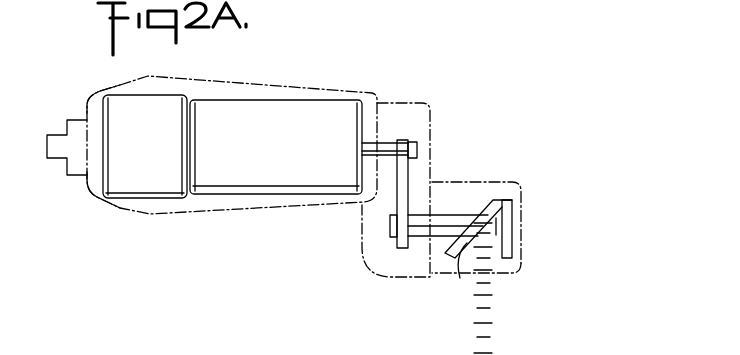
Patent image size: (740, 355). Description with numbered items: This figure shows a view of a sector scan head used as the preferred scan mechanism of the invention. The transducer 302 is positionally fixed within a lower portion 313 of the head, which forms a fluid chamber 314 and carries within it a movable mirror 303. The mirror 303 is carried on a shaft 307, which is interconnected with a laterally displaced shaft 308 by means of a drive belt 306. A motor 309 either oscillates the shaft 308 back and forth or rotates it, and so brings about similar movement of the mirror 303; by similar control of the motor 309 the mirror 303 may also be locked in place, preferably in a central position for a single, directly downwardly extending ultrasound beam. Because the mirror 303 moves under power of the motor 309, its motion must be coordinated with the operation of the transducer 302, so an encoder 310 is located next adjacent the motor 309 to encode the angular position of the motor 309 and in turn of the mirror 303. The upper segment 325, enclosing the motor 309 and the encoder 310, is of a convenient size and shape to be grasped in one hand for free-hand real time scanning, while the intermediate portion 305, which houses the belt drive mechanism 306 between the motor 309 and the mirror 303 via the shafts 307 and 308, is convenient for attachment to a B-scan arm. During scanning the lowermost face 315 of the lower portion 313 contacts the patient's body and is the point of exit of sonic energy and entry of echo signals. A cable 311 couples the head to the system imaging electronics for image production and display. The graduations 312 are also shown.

The transducer 302 is at (517, 240).
The mirror 303 is at (463, 263).
The intermediate portion 305 is at (360, 223).
The drive belt 306 is at (412, 171).
The shaft 307 is at (417, 237).
The shaft 308 is at (385, 146).
The motor 309 is at (258, 164).
The encoder 310 is at (140, 162).
The cable 311 is at (47, 160).
The scale graduations 312 is at (483, 326).
The lower portion 313 is at (523, 213).
The fluid chamber 314 is at (457, 192).
The lowermost face 315 is at (497, 275).
The upper segment 325 is at (270, 87).